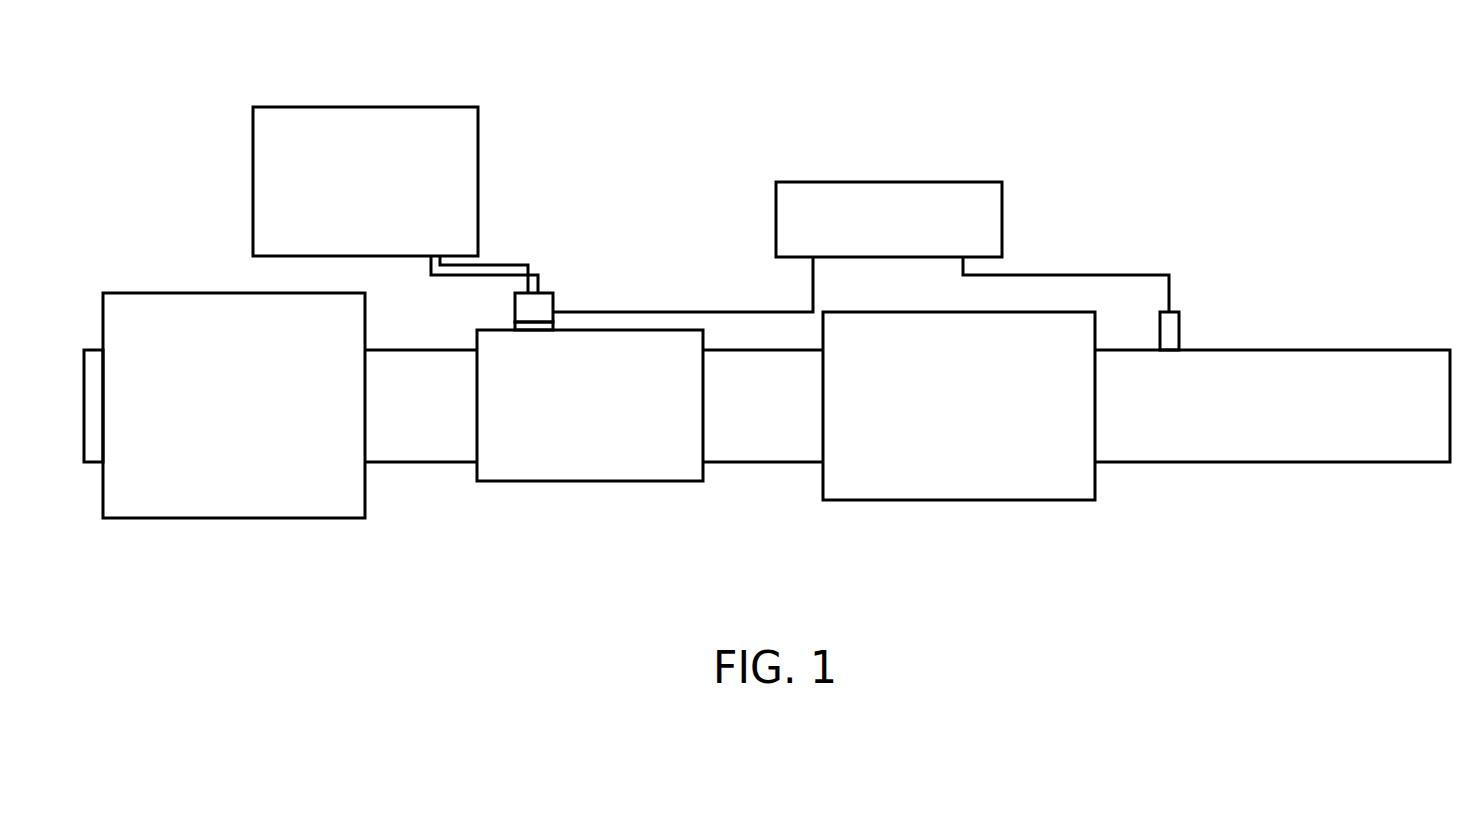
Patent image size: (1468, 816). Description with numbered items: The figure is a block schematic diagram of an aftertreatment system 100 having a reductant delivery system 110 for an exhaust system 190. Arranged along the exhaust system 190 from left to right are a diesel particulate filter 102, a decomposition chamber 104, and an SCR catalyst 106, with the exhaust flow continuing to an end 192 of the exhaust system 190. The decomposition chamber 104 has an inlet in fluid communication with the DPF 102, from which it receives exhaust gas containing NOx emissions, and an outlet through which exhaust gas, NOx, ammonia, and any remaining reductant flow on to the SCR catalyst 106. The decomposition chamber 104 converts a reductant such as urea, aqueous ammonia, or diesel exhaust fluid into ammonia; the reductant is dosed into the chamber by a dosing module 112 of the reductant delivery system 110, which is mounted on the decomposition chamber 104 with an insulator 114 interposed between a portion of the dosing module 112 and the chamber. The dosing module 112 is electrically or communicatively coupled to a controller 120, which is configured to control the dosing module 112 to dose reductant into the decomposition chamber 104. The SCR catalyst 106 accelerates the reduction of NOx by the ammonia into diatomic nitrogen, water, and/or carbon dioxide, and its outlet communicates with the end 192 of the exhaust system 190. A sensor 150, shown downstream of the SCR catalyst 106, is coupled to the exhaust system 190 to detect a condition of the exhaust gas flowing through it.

The aftertreatment system 100 is at (1050, 248).
The diesel particulate filter 102 is at (267, 518).
The decomposition chamber 104 is at (688, 330).
The SCR catalyst 106 is at (967, 500).
The reductant delivery system 110 is at (658, 228).
The dosing module 112 is at (553, 300).
The insulator 114 is at (430, 107).
The controller 120 is at (868, 182).
The sensor 150 is at (1205, 322).
The exhaust system 190 is at (465, 563).
The end of the exhaust system 192 is at (1362, 476).